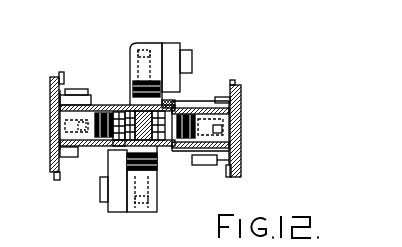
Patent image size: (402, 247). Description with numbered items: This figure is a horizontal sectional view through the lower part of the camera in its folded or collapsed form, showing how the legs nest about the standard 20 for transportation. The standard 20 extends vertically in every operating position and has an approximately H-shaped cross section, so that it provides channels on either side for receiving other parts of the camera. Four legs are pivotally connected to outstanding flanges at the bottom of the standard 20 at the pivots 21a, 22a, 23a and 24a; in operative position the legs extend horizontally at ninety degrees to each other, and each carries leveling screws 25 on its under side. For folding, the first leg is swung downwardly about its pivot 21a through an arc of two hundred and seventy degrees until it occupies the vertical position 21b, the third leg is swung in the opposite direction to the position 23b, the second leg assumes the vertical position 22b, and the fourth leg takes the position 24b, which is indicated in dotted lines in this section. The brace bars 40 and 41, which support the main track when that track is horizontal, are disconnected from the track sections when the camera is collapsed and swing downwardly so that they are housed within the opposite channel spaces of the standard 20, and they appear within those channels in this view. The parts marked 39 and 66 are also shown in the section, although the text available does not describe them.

The standard 20 is at (167, 103).
The pivot of leg 21a is at (79, 90).
The folded position of leg 21b is at (58, 114).
The pivot of leg 22a is at (113, 208).
The folded position of leg 22b is at (148, 200).
The pivot of leg 23a is at (210, 166).
The folded position of leg 23b is at (241, 128).
The pivot of leg 24a is at (187, 53).
The folded position of leg 24b is at (141, 43).
The leveling screws 25 is at (104, 113).
The retaining tab 39 is at (57, 71).
The brace bar 40 is at (117, 144).
The brace bar 41 is at (176, 108).
The step member 66 is at (73, 159).